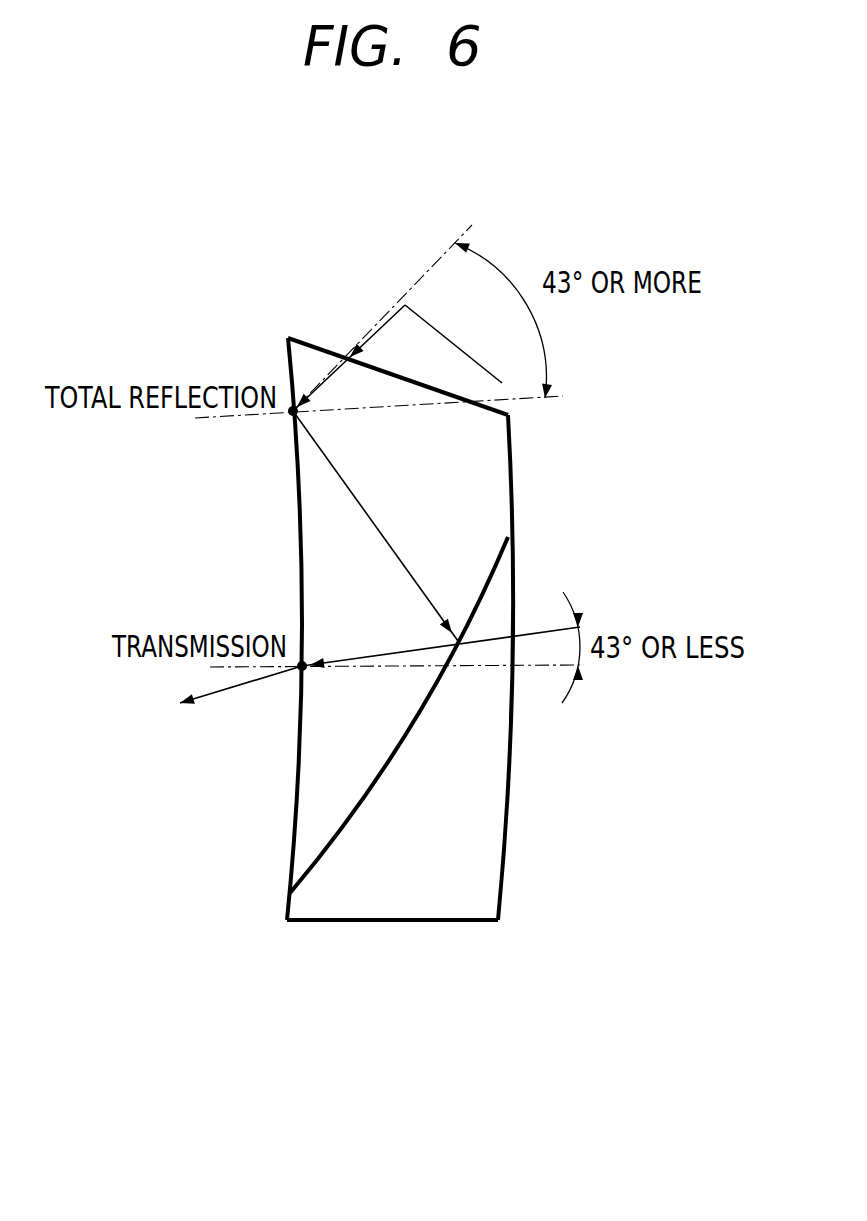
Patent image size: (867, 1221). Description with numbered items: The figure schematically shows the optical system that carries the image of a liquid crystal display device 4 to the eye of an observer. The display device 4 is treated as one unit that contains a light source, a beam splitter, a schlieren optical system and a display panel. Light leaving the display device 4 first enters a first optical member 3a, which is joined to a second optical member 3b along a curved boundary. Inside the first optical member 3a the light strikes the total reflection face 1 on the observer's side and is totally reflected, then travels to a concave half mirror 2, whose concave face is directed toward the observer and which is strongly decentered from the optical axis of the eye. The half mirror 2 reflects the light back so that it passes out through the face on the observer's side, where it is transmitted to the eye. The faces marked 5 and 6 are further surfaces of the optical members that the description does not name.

The total reflection face 1 is at (298, 505).
The concave half mirror 2 is at (417, 720).
The first optical member 3a is at (310, 790).
The second optical member 3b is at (389, 895).
The liquid crystal display device 4 is at (423, 318).
The top light entrance surface 5 is at (303, 340).
The right surface of prism 6 is at (508, 818).